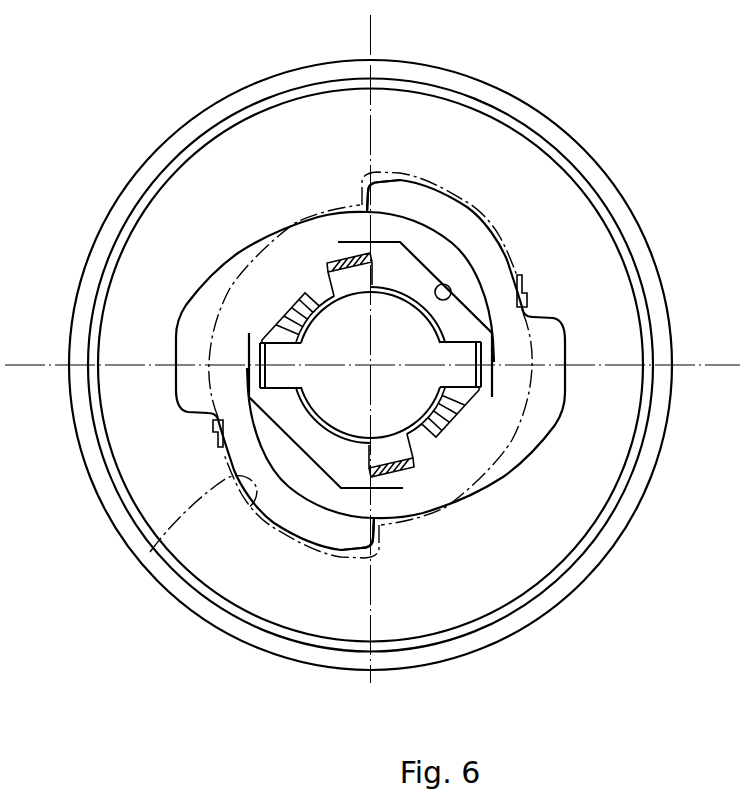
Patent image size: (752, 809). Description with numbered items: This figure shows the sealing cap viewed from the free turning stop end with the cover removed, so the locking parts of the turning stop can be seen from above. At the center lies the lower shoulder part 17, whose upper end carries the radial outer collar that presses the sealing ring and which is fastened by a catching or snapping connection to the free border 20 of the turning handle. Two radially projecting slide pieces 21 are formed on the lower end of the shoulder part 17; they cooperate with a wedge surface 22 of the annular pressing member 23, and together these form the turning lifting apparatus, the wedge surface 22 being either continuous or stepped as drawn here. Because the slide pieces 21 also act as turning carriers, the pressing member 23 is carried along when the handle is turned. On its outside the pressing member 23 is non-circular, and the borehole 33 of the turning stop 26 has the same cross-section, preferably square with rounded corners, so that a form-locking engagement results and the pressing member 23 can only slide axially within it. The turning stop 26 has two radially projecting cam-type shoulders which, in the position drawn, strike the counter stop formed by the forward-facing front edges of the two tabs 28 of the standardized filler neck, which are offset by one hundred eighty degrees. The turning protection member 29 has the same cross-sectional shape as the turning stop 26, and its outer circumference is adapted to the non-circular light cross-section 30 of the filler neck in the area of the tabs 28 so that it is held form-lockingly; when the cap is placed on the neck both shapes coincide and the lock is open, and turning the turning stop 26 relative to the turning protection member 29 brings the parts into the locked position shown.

The lower shoulder part 17 is at (413, 403).
The free border 20 is at (272, 652).
The slide pieces 21 is at (275, 373).
The wedge surface 22 is at (298, 302).
The annular pressing member 23 is at (338, 462).
The turning stop 26 is at (203, 307).
The tabs 28 is at (527, 297).
The turning protection member 29 is at (345, 540).
The non-circular light cross-section 30 is at (228, 483).
The borehole 33 is at (450, 284).